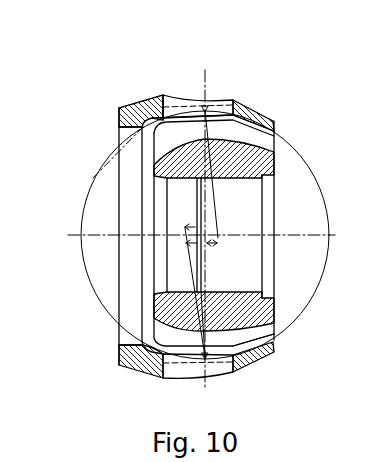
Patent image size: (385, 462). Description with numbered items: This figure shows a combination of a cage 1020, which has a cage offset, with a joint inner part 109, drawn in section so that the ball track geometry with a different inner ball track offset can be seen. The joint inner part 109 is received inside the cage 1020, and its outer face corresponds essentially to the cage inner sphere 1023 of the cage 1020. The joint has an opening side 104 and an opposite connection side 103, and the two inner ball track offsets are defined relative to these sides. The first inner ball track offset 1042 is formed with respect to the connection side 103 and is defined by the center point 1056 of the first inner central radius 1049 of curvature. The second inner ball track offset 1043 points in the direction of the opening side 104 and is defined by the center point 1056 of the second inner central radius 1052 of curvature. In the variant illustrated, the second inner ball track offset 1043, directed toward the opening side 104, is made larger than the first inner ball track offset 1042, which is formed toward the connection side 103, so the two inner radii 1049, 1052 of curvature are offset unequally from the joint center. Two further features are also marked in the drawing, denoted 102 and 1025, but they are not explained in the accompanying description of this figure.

The outer ring 102 is at (262, 115).
The connection side 103 is at (309, 158).
The opening side 104 is at (104, 133).
The joint inner part 109 is at (258, 149).
The cage 1020 is at (240, 103).
The cage inner sphere 1023 is at (93, 178).
The upper axis point 1025 is at (208, 108).
The first inner ball track offset 1042 is at (210, 250).
The second inner ball track offset 1043 is at (185, 227).
The first inner (central) radius of curvature 1049 is at (213, 192).
The second inner (central) radius of curvature 1052 is at (157, 318).
The center point 1056 is at (186, 243).